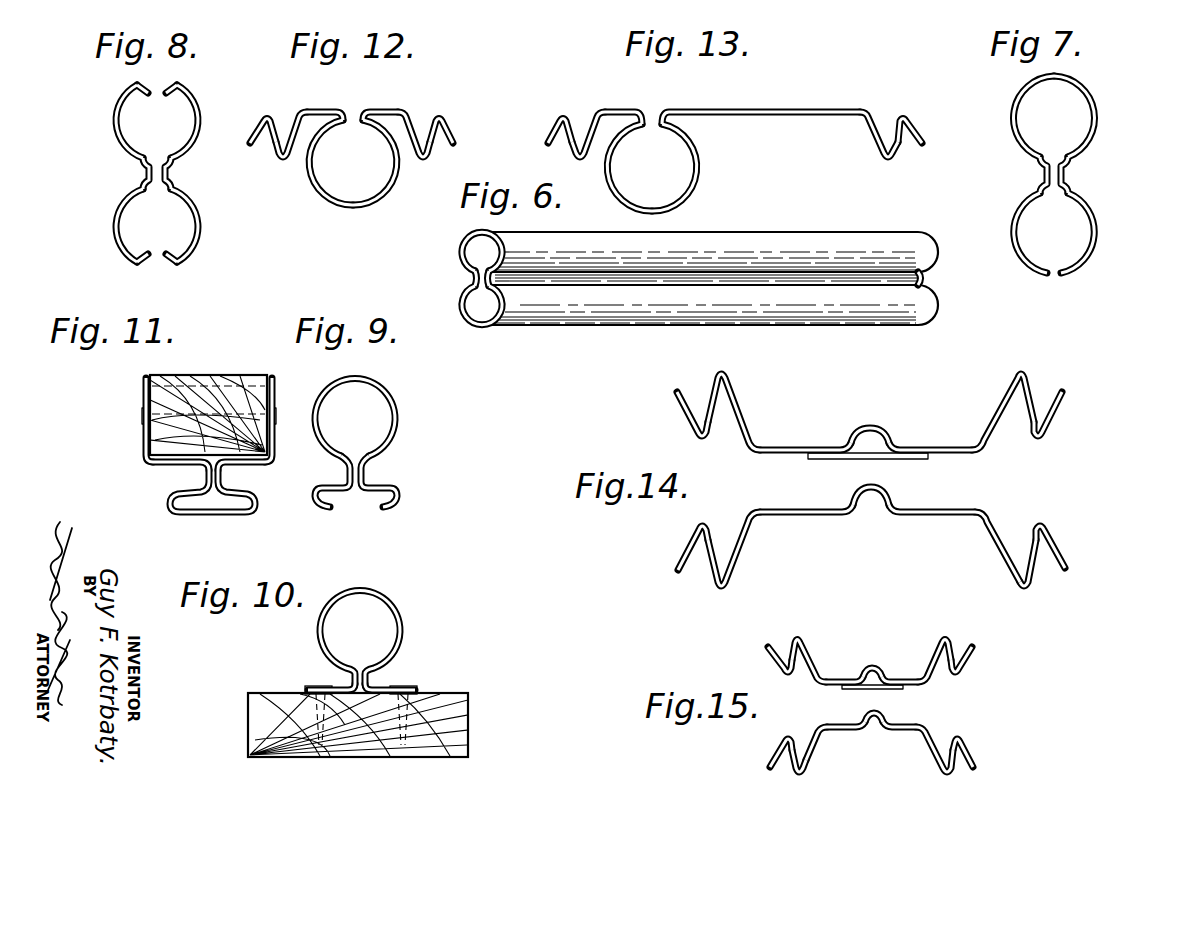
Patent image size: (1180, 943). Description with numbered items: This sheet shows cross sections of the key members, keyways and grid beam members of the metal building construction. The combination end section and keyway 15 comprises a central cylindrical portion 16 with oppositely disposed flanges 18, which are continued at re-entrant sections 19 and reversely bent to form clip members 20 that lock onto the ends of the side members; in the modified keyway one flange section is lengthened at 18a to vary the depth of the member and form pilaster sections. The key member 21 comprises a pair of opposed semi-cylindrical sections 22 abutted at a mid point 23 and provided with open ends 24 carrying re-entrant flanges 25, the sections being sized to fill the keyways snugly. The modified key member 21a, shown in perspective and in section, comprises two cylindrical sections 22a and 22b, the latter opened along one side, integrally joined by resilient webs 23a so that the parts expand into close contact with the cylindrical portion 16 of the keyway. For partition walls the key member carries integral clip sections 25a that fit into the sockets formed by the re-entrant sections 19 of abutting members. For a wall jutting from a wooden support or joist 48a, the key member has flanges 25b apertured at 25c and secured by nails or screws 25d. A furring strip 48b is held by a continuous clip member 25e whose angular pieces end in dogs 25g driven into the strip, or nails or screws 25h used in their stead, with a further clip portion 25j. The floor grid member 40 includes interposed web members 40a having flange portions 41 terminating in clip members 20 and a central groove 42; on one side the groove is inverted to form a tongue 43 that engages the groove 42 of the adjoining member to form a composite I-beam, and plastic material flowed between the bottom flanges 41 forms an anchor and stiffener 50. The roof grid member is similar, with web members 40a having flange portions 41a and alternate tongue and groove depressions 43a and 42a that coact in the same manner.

In FIG. 12, the combination end section and keyway 15 is at (362, 180).
In FIG. 13, the combination end section and keyway 15 is at (673, 168).
In FIG. 12, the central cylindrical portion 16 is at (320, 193).
In FIG. 13, the central cylindrical portion 16 is at (697, 150).
In FIG. 12, the flange 18 is at (315, 109).
In FIG. 13, the flange 18 is at (620, 110).
In FIG. 13, the varied flange section 18a is at (792, 117).
In FIG. 12, the re-entrant section 19 is at (293, 120).
In FIG. 13, the re-entrant section 19 is at (878, 117).
In FIG. 12, the clip member 20 is at (255, 130).
In FIG. 13, the clip member 20 is at (917, 120).
In FIG. 14, the clip member 20 is at (1057, 417).
In FIG. 15, the clip member 20 is at (770, 652).
In FIG. 8, the key member 21 is at (178, 128).
In FIG. 9, the key member 21 is at (378, 427).
In FIG. 10, the key member 21 is at (388, 618).
In FIG. 7, the modified key member 21a is at (1077, 113).
In FIG. 6, the modified key member 21a is at (476, 248).
In FIG. 8, the semi-cylindrical section 22 is at (118, 105).
In FIG. 7, the semi-cylindrical section 22 is at (1058, 272).
In FIG. 6, the semi-cylindrical section 22 is at (482, 325).
In FIG. 7, the cylindrical section 22a is at (1021, 93).
In FIG. 6, the cylindrical section 22a is at (466, 266).
In FIG. 7, the cylindrical section 22b is at (1042, 248).
In FIG. 6, the cylindrical section 22b is at (474, 306).
In FIG. 8, the mid point 23 is at (150, 175).
In FIG. 7, the resilient web 23a is at (1062, 175).
In FIG. 6, the resilient web 23a is at (478, 278).
In FIG. 8, the open end 24 is at (200, 220).
In FIG. 8, the re-entrant flange 25 is at (160, 252).
In FIG. 9, the integral clip section 25a is at (398, 493).
In FIG. 10, the flange 25b is at (418, 688).
In FIG. 10, the aperture 25c is at (320, 686).
In FIG. 10, the nail or screw 25d is at (407, 686).
In FIG. 11, the clip member 25e is at (243, 505).
In FIG. 11, the dog 25g is at (148, 383).
In FIG. 11, the nail or screw 25h is at (277, 412).
In FIG. 11, the lower arms of clip 25j is at (150, 443).
In FIG. 14, the floor grid member 40 is at (950, 447).
In FIG. 15, the web member 40a is at (903, 680).
In FIG. 14, the flange portion 41 is at (745, 422).
In FIG. 15, the flange portion 41a is at (818, 663).
In FIG. 14, the depressed portion or groove 42 is at (878, 428).
In FIG. 15, the groove depression 42a is at (871, 669).
In FIG. 14, the tongue portion 43 is at (872, 495).
In FIG. 15, the tongue depression 43a is at (871, 723).
In FIG. 10, the wooden support or joist 48a is at (260, 705).
In FIG. 11, the furring strip 48b is at (203, 382).
In FIG. 14, the plastic anchor member 50 is at (1020, 557).
In FIG. 15, the plastic anchor member 50 is at (801, 752).